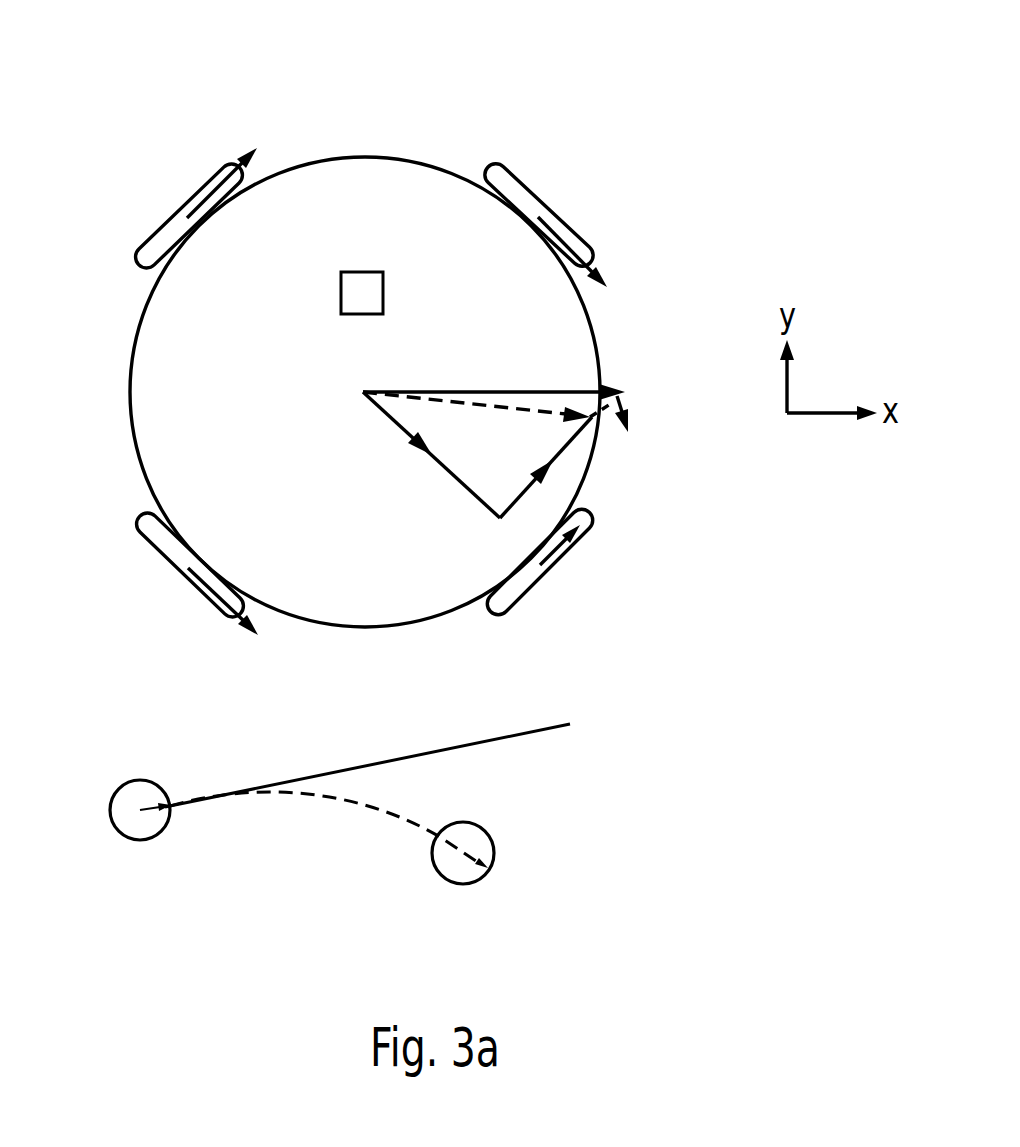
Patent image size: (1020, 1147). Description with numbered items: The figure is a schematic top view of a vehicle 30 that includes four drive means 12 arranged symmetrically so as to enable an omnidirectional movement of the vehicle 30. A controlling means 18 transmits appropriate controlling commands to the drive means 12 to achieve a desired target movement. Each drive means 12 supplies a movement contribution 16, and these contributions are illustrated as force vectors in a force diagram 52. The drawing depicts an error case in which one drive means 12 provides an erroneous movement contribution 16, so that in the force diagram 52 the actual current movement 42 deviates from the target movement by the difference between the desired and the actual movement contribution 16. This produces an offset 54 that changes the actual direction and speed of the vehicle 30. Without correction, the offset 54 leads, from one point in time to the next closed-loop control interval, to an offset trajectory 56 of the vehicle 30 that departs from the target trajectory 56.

The vehicle 30 is at (567, 49).
The force diagram 52 is at (437, 281).
The drive means 12 is at (354, 404).
The movement contribution 16 is at (510, 442).
The controlling means 18 is at (340, 295).
The actual current movement 42 is at (522, 426).
The offset 54 is at (628, 399).
The trajectory 56 is at (367, 791).